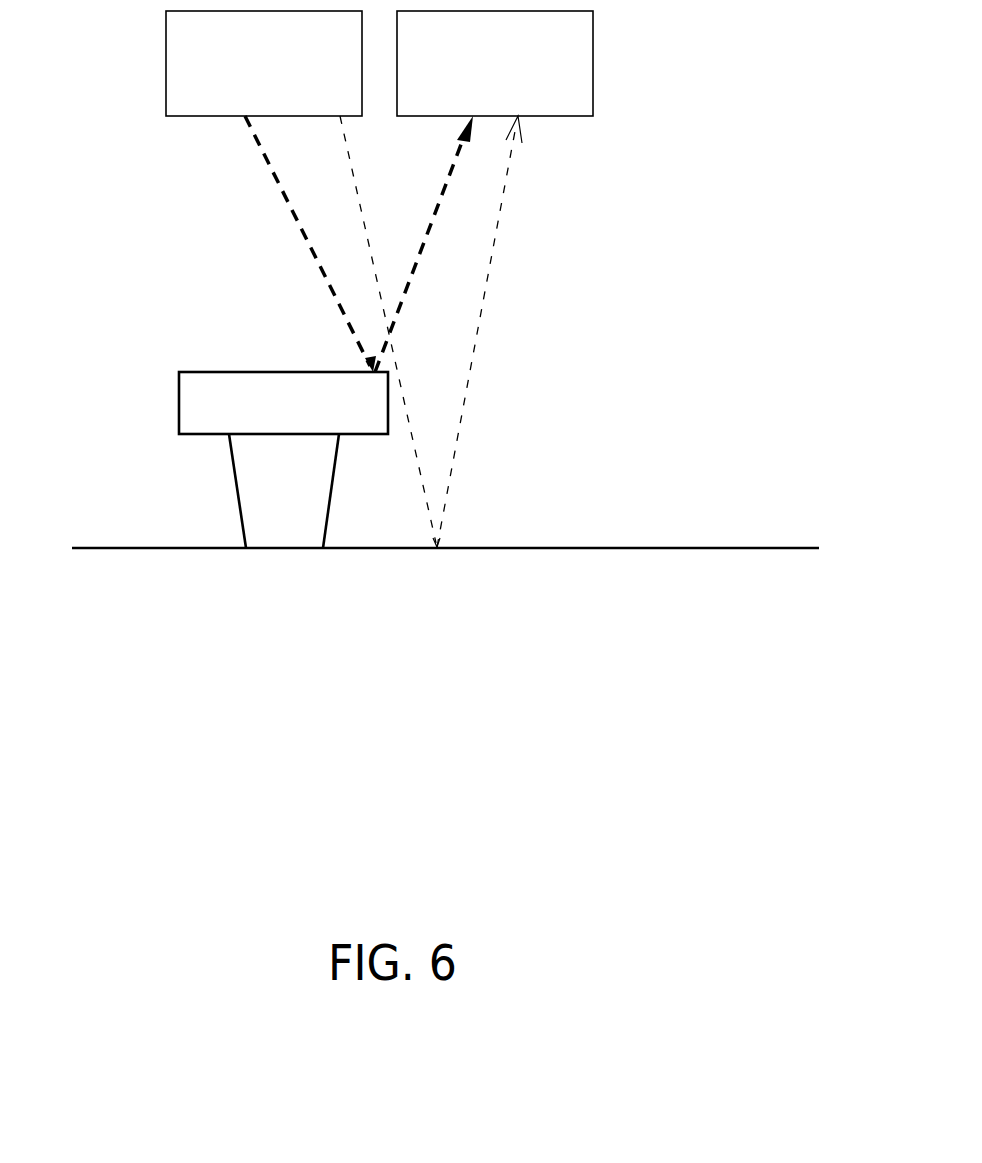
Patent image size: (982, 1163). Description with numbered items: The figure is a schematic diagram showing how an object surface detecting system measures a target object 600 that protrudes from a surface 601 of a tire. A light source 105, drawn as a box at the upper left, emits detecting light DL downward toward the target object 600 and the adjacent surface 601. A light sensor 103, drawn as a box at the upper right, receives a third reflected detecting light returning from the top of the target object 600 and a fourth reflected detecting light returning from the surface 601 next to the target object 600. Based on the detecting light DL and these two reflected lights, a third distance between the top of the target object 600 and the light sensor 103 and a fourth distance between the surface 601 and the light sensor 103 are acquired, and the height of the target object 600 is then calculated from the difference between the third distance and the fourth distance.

The light source 105 is at (289, 80).
The light sensor 103 is at (520, 80).
The target object 600 is at (179, 403).
The surface 601 is at (614, 548).
The detecting light DL is at (323, 331).